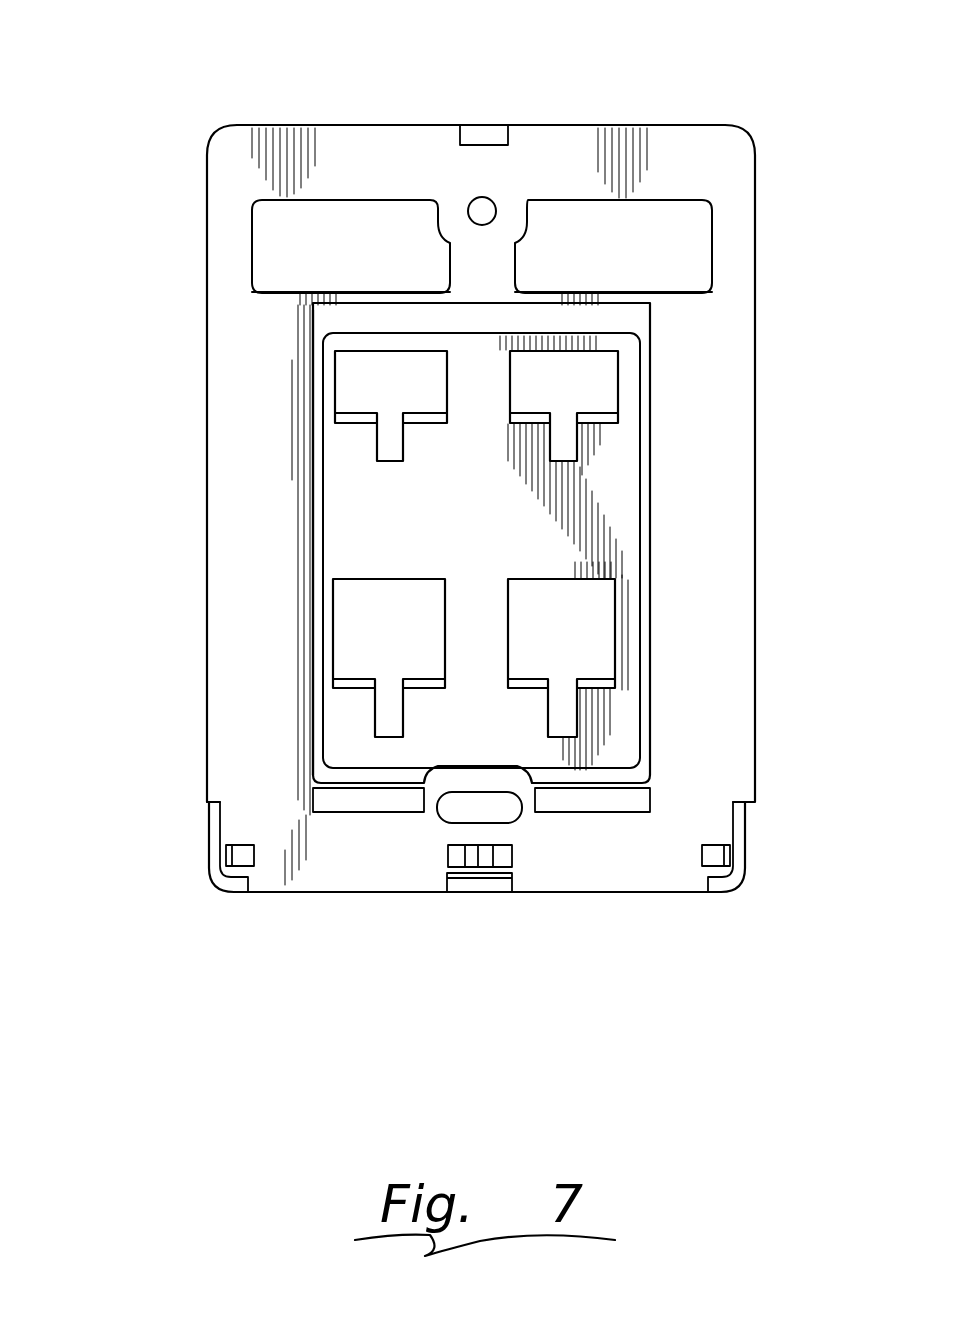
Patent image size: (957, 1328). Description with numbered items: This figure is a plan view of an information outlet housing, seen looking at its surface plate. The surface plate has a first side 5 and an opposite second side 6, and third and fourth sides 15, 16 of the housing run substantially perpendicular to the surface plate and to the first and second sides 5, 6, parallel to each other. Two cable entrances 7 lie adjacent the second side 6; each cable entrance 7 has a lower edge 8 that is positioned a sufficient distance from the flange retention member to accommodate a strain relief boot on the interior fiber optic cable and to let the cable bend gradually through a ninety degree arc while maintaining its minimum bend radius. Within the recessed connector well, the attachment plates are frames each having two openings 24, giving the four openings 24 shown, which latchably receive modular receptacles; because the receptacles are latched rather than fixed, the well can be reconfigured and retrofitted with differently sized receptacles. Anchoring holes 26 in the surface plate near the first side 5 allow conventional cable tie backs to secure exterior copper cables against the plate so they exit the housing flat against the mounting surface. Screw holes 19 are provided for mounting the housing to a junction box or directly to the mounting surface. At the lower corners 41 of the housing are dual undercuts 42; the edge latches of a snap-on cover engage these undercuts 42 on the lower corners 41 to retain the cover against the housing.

The first side 5 is at (665, 893).
The second side 6 is at (567, 125).
The cable entrance 7 is at (281, 257).
The lower edge 8 is at (341, 292).
The third side 15 is at (757, 472).
The fourth side 16 is at (207, 480).
The screw hole 19 is at (486, 212).
The opening 24 is at (390, 627).
The anchoring hole 26 is at (238, 858).
The lower corner 41 is at (210, 893).
The undercut 42 is at (210, 830).